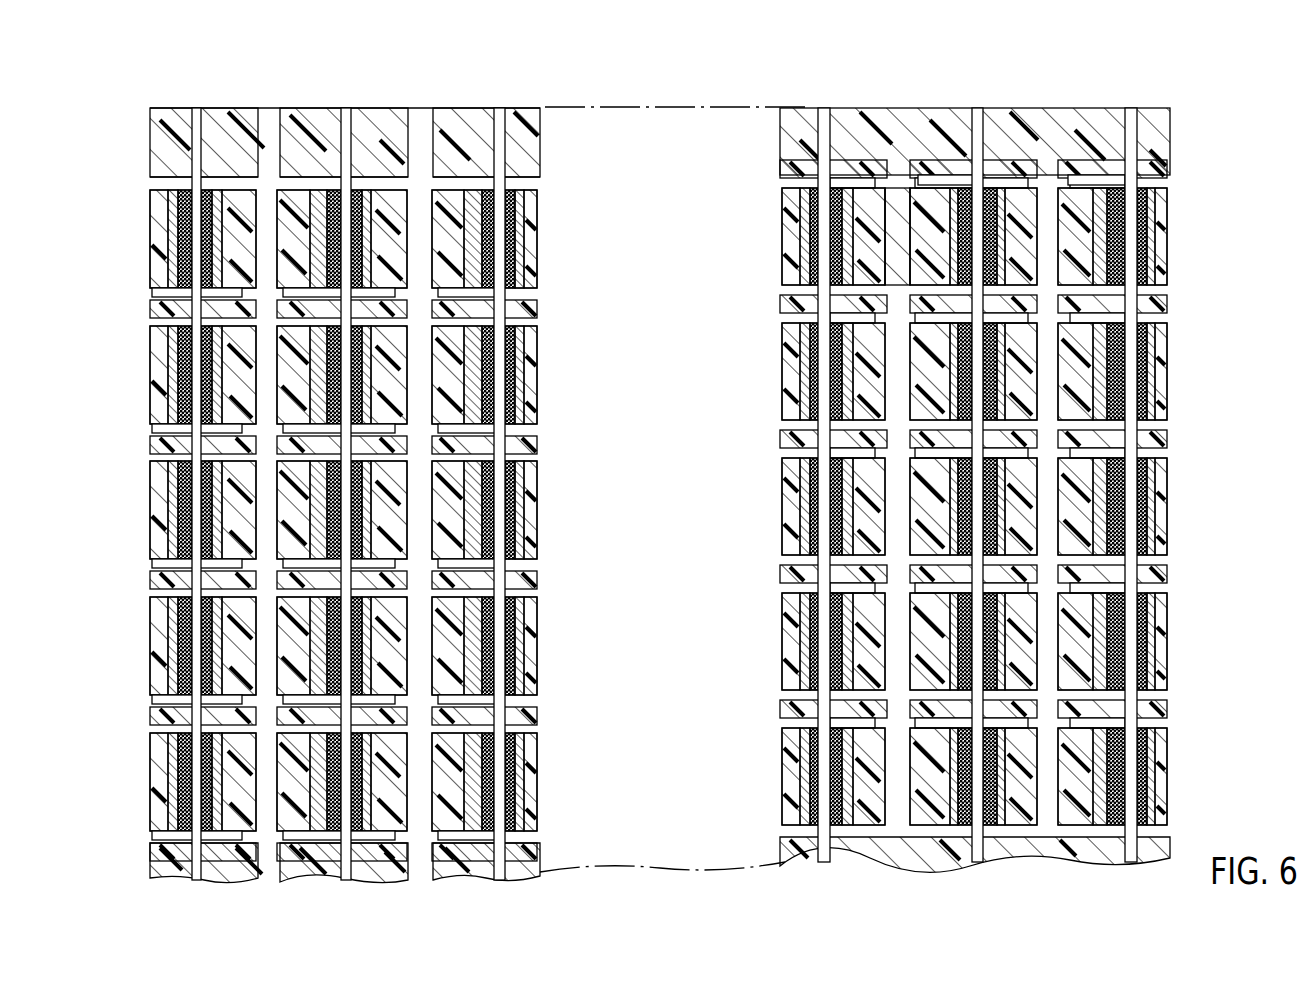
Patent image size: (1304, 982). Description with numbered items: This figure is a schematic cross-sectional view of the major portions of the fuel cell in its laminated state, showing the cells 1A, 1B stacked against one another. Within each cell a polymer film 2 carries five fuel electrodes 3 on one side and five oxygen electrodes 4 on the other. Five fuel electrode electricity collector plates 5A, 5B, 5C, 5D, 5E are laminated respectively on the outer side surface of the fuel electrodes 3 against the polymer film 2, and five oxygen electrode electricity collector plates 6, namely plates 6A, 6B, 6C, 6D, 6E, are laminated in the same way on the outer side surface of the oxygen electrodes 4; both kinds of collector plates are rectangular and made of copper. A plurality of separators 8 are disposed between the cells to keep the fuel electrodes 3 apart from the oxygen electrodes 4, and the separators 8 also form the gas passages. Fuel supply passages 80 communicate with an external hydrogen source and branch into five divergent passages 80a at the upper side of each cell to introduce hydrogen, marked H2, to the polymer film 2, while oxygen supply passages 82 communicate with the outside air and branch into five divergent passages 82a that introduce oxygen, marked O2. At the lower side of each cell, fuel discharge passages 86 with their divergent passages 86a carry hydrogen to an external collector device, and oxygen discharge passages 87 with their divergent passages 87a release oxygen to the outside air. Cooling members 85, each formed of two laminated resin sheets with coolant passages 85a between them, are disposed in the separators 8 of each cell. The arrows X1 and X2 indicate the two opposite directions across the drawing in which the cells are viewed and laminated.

The cell 1A is at (982, 874).
The cell 1B is at (822, 868).
The polymer film 2 is at (190, 878).
The fuel electrode 3 is at (1025, 245).
The oxygen electrode 4 is at (925, 205).
The fuel electrode electricity collector plate 5A is at (1000, 185).
The fuel electrode electricity collector plate 5B is at (1170, 305).
The fuel electrode electricity collector plate 5C is at (1150, 440).
The fuel electrode electricity collector plate 5D is at (1150, 575).
The fuel electrode electricity collector plate 5E is at (1150, 712).
The oxygen electrode electricity collector plate 6 is at (962, 176).
The oxygen electrode electricity collector plate 6A is at (935, 182).
The oxygen electrode electricity collector plate 6B is at (950, 335).
The oxygen electrode electricity collector plate 6C is at (950, 470).
The oxygen electrode electricity collector plate 6D is at (950, 605).
The oxygen electrode electricity collector plate 6E is at (950, 740).
The separator 8 is at (285, 160).
The fuel supply passage 80 is at (445, 185).
The divergent passage 80a is at (400, 185).
The oxygen supply passage 82 is at (265, 190).
The divergent passage 82a is at (262, 165).
The cooling member 85 is at (385, 190).
The coolant passage 85a is at (400, 225).
The fuel discharge passage 86 is at (1043, 800).
The divergent passage 86a is at (1140, 230).
The oxygen discharge passage 87 is at (890, 800).
The divergent passage 87a is at (855, 195).
The direction X1 is at (45, 275).
The direction X2 is at (100, 348).
The oxygen flow O2 is at (268, 138).
The hydrogen flow H2 is at (420, 140).